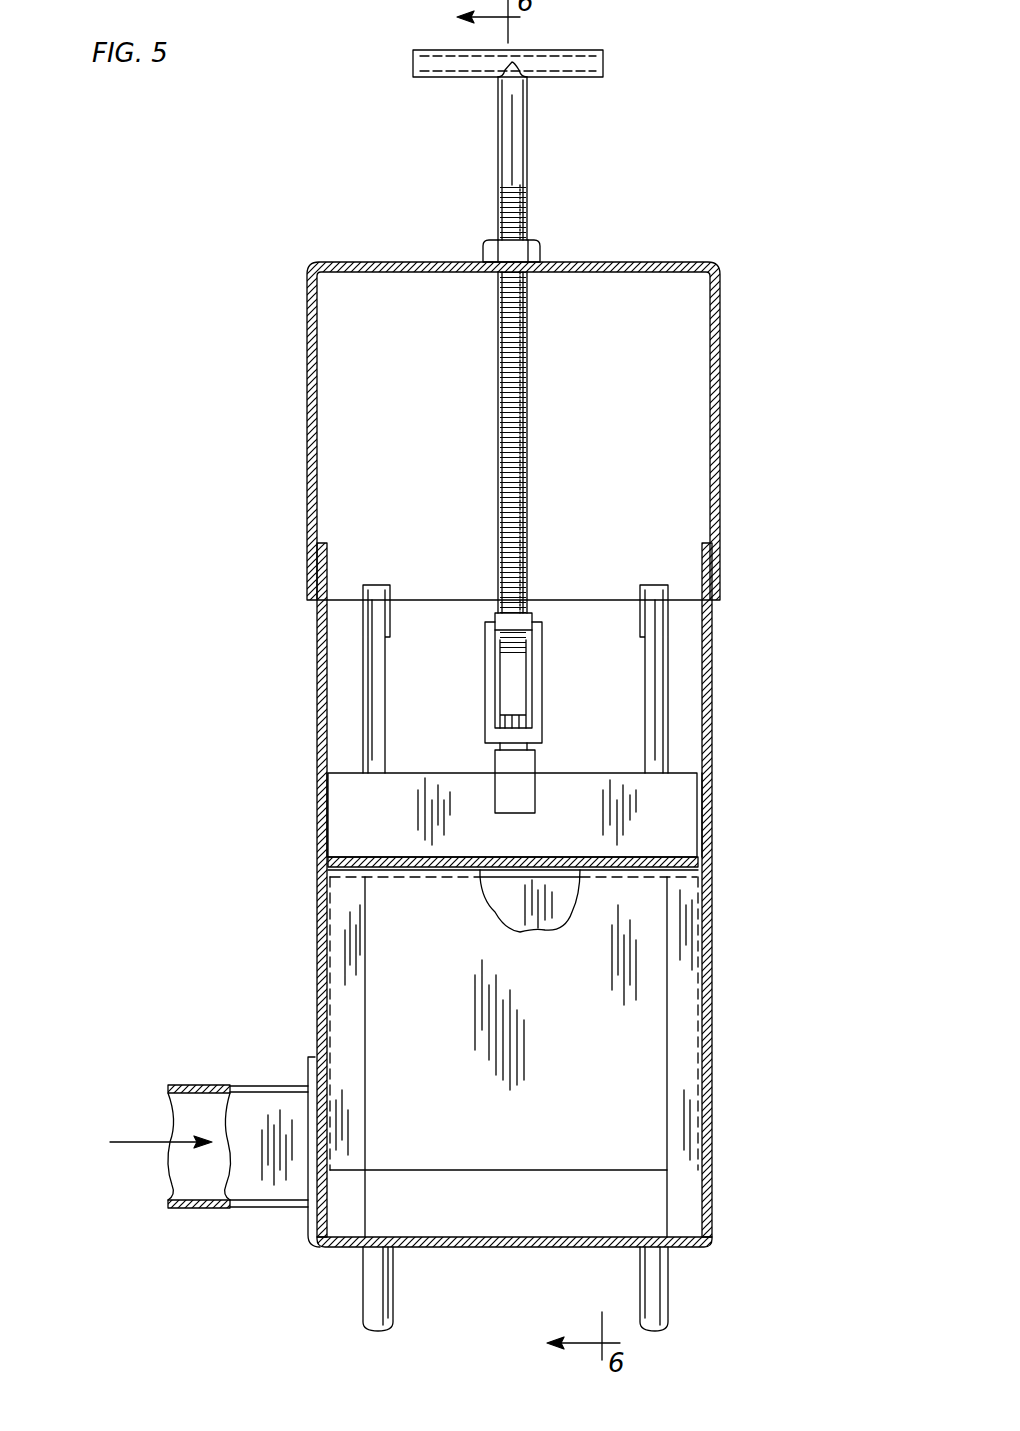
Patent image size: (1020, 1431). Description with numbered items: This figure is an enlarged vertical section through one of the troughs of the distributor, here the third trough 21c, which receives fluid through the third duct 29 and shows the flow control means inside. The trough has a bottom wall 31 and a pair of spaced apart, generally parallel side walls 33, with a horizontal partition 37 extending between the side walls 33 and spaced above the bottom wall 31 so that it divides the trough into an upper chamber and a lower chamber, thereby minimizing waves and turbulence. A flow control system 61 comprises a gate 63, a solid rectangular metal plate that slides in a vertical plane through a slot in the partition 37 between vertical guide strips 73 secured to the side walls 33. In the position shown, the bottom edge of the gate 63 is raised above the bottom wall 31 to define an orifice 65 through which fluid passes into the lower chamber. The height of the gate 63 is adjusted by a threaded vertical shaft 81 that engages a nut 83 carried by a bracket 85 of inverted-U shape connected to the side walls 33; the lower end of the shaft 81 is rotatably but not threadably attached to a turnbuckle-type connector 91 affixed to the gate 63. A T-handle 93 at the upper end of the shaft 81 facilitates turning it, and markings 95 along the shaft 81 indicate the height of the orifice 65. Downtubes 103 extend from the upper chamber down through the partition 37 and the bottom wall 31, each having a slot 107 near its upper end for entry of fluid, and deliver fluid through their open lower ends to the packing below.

The third trough 21c is at (713, 720).
The third duct 29 is at (213, 1085).
The bottom wall 31 is at (683, 1250).
The side walls 33 is at (317, 793).
The horizontal partition 37 is at (690, 862).
The flow control system 61 is at (557, 135).
The gate 63 is at (350, 833).
The orifice 65 is at (648, 1198).
The vertical guide strips 73 is at (347, 1032).
The threaded vertical shaft 81 is at (527, 405).
The nut 83 is at (538, 245).
The bracket 85 is at (722, 472).
The turnbuckle-type connector 91 is at (545, 678).
The T-handle 93 is at (603, 62).
The markings 95 is at (500, 215).
The downtubes 103 is at (373, 583).
The slot 107 is at (392, 612).